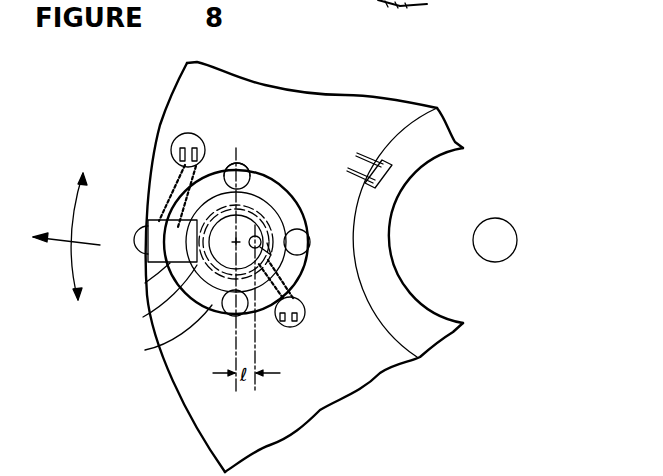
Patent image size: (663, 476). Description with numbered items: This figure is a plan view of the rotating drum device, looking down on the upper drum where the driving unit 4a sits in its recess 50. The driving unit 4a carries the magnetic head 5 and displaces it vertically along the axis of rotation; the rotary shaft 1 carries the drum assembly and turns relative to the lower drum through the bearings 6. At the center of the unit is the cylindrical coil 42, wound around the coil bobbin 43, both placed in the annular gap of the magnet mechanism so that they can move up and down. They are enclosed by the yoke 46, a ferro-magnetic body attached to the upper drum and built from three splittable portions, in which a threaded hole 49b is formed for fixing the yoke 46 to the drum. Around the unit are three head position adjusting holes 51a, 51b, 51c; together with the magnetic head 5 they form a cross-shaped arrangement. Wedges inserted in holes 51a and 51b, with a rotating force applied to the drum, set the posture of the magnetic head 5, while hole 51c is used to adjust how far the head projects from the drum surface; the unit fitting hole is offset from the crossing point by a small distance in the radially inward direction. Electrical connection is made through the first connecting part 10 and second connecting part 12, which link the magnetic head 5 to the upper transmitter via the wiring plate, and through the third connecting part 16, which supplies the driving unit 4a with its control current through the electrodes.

The rotary shaft 1 is at (500, 252).
The driving unit 4a is at (145, 283).
The magnetic head 5 is at (135, 240).
The bearings 6 is at (377, 9).
The first connecting part 10 is at (182, 140).
The second connecting part 12 is at (392, 158).
The third connecting part 16 is at (294, 330).
The cylindrical coil 42 is at (247, 205).
The coil bobbin 43 is at (212, 160).
The yoke 46 is at (262, 205).
The threaded hole 49b is at (300, 277).
The recess 50 is at (143, 317).
The head position adjusting hole 51a is at (232, 163).
The head position adjusting hole 51b is at (146, 350).
The head position adjusting hole 51c is at (302, 230).